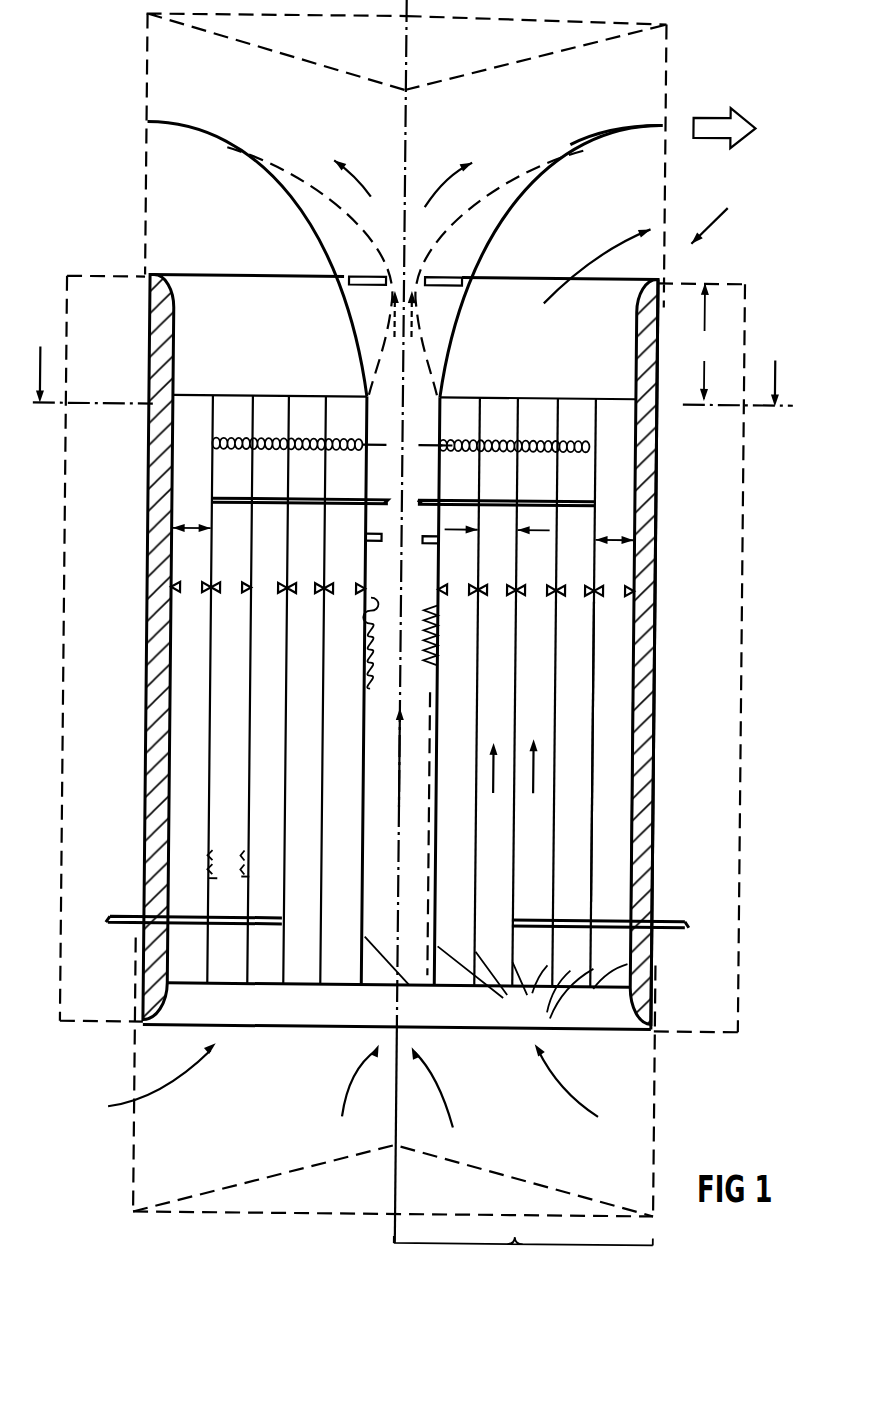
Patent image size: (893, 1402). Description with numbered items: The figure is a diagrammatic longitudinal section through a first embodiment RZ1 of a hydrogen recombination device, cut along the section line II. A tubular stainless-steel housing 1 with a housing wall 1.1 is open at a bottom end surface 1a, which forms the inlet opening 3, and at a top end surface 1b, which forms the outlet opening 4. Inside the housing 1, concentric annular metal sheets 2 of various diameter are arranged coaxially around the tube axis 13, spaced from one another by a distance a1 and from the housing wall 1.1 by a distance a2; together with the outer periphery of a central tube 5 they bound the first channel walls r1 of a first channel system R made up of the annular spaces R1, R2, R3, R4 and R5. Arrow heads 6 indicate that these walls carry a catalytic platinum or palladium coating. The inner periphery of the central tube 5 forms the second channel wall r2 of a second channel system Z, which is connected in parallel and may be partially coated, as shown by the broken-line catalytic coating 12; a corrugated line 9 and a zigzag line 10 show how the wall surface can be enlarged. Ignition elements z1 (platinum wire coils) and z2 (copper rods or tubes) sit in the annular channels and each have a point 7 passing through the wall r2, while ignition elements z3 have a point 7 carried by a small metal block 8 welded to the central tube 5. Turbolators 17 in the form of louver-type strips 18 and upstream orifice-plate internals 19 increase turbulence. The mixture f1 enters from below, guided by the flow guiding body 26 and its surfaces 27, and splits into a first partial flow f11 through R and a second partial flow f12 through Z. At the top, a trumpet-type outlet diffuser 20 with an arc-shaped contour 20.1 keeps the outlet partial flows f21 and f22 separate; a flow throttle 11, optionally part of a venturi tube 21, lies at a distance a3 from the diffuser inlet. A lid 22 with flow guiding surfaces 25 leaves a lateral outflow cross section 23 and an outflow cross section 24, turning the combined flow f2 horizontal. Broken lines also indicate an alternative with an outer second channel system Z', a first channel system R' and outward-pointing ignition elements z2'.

The tubular housing 1 is at (655, 537).
The housing wall 1.1 is at (650, 725).
The bottom open end surface 1a is at (432, 1028).
The top open end surface 1b is at (237, 396).
The annular metal sheets 2 is at (287, 560).
The inlet opening 3 is at (604, 1019).
The outlet opening 4 is at (203, 302).
The central tube 5 is at (366, 742).
The arrow heads / catalytic coating 6 is at (484, 597).
The point 7 is at (386, 537).
The small solid metal block 8 is at (420, 541).
The corrugated line 9 is at (367, 672).
The zigzag line 10 is at (433, 658).
The flow throttle 11 is at (356, 286).
The catalytic coating 12 is at (428, 926).
The tube axis 13 is at (399, 220).
The turbolators 17 is at (212, 874).
The louver-type strips 18 is at (215, 855).
The orifice-plate type internals 19 is at (216, 884).
The trumpet-type outlet diffuser 20 is at (444, 306).
The arc-shaped outlet diffuser contour 20.1 is at (573, 148).
The venturi tube 21 is at (300, 181).
The lid 22 is at (626, 38).
The lateral outflow cross section 23 is at (198, 206).
The outflow cross section 24 is at (194, 98).
The first flow guiding surfaces 25 is at (245, 52).
The second flow guiding body 26 is at (272, 1197).
The flow guiding surfaces 27 is at (554, 1188).
The distance between metal sheets a1 is at (496, 530).
The distance from housing wall a2 is at (608, 536).
The distance of throttle orifice a3 is at (711, 342).
The mixture flow arrows f1 is at (562, 1103).
The combined outflow arrow f2 is at (712, 112).
The first partial flow f11 is at (546, 752).
The second partial flow f12 is at (397, 730).
The first outlet-side partial flow f21 is at (604, 250).
The second outlet-side partial flow f22 is at (370, 196).
The first channel system R is at (565, 689).
The alternative first channel system R' is at (522, 1261).
The annular channel R1 is at (460, 691).
The annular channel R2 is at (498, 692).
The annular channel R3 is at (537, 692).
The annular channel R4 is at (575, 693).
The annular channel R5 is at (608, 752).
The first embodiment of the device RZ1 is at (733, 216).
The second channel system Z is at (298, 692).
The alternative second channel system Z' is at (706, 802).
The wire-coil ignition elements z1 is at (486, 452).
The pin-type or tubular ignition elements z2 is at (578, 530).
The outward-oriented ignition elements z2' is at (406, 949).
The point-type ignition elements z3 is at (378, 538).
The first channel walls r1 is at (532, 988).
The second channel wall r2 is at (395, 981).
The section line II is at (406, 392).